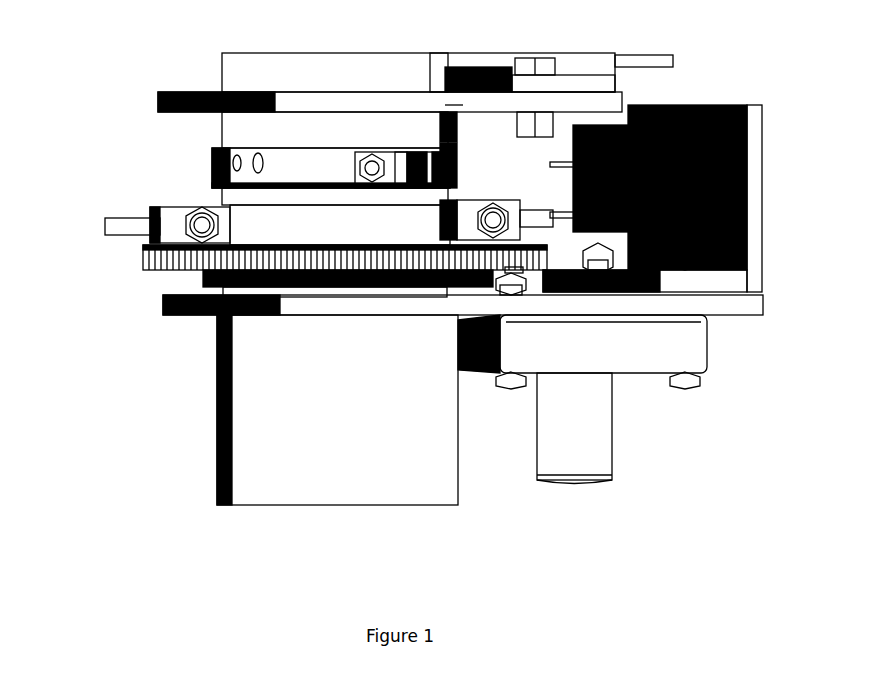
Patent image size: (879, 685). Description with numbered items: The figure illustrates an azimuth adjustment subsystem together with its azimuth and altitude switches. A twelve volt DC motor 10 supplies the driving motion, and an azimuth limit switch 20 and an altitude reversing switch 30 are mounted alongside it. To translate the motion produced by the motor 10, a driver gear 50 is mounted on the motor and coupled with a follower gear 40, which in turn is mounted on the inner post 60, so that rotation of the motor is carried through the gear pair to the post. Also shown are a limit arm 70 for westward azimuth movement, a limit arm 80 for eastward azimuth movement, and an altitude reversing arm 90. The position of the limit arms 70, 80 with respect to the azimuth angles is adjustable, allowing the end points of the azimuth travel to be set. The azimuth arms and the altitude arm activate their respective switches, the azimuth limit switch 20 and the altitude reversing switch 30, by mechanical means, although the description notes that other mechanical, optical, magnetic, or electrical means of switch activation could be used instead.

The motor 10 is at (587, 448).
The azimuth limit switch 20 is at (702, 215).
The altitude reversing switch 30 is at (692, 157).
The follower gear 40 is at (165, 277).
The driver gear 50 is at (537, 268).
The inner post 60 is at (217, 133).
The limit arm for westward azimuth movement 70 is at (122, 232).
The limit arm for eastward azimuth movement 80 is at (545, 218).
The altitude reversing arm 90 is at (400, 188).